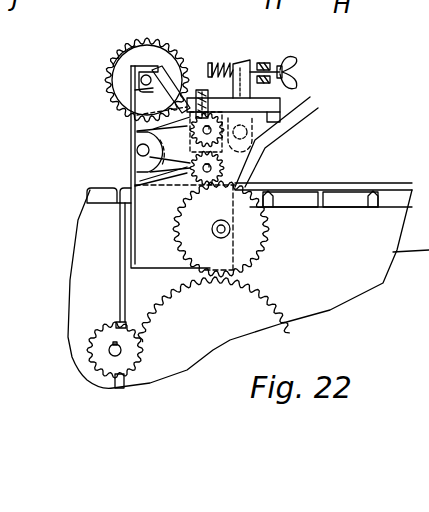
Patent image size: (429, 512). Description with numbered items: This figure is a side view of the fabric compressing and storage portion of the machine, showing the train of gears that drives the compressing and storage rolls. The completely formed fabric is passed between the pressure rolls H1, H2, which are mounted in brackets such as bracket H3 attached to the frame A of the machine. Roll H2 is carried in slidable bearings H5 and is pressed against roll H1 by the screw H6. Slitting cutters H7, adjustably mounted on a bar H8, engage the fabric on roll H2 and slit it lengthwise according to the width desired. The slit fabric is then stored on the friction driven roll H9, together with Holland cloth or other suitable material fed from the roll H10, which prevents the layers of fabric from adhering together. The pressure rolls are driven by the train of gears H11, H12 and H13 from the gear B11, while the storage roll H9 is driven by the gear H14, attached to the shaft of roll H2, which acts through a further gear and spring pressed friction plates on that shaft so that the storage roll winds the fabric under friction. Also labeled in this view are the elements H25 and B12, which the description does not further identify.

The frame A is at (310, 185).
The bracket H3 is at (262, 182).
The gear H13 is at (131, 131).
The friction driven roll H9 is at (118, 68).
The gear rim H25 is at (125, 47).
The pressure roll H1 is at (133, 175).
The roll H10 is at (122, 135).
The pressure roll H2 is at (137, 118).
The slidable bearings H5 is at (140, 172).
The gear H12 is at (140, 181).
The screw H6 is at (208, 92).
The gear H14 is at (207, 88).
The bar H8 is at (280, 107).
The slitting cutters H7 is at (283, 130).
The gear H11 is at (272, 238).
The gear B11 is at (270, 293).
The small gear B12 is at (92, 357).